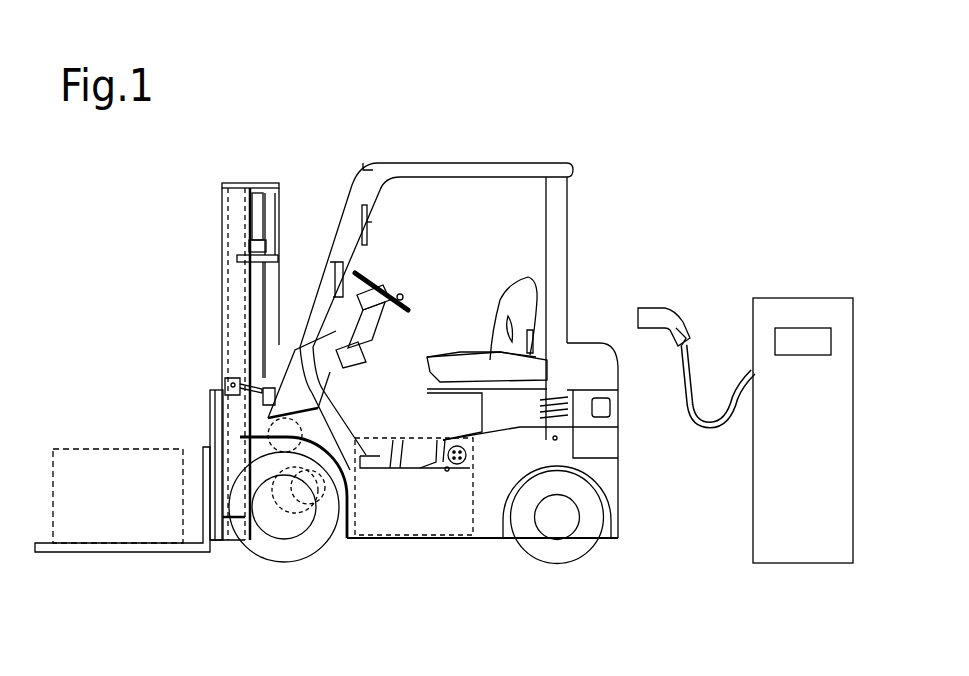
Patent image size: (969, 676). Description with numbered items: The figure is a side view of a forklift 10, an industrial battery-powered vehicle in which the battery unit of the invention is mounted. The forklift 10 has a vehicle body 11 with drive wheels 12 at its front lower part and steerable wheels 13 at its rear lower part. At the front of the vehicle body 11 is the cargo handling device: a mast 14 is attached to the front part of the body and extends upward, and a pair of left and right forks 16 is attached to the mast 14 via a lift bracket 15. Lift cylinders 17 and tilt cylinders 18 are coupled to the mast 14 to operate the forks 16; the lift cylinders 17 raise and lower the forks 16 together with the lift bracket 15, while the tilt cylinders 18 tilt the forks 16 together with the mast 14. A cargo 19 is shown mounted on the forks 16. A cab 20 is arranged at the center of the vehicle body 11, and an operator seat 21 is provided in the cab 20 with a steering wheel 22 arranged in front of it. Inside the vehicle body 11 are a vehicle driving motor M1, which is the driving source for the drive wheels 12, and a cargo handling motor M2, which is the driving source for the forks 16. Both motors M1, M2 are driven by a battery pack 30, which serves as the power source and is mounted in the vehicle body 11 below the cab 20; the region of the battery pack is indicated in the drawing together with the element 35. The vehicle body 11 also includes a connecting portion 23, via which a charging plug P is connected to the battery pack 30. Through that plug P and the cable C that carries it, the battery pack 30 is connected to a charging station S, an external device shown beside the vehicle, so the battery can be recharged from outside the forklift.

The forklift 10 is at (289, 147).
The vehicle body 11 is at (410, 553).
The drive wheels 12 is at (285, 562).
The steerable wheels 13 is at (557, 563).
The mast 14 is at (209, 176).
The lift bracket 15 is at (222, 388).
The forks 16 is at (100, 543).
The lift cylinders 17 is at (262, 287).
The tilt cylinders 18 is at (277, 384).
The cargo 19 is at (113, 449).
The cab 20 is at (479, 223).
The operator seat 21 is at (510, 293).
The steering wheel 22 is at (412, 300).
The connecting portion 23 is at (466, 453).
The battery pack 30 is at (390, 437).
The battery housing 35 is at (462, 466).
The vehicle driving motor M1 is at (320, 500).
The cargo handling motor M2 is at (322, 406).
The charging plug P is at (650, 308).
The cable C is at (705, 428).
The charging station S is at (753, 515).